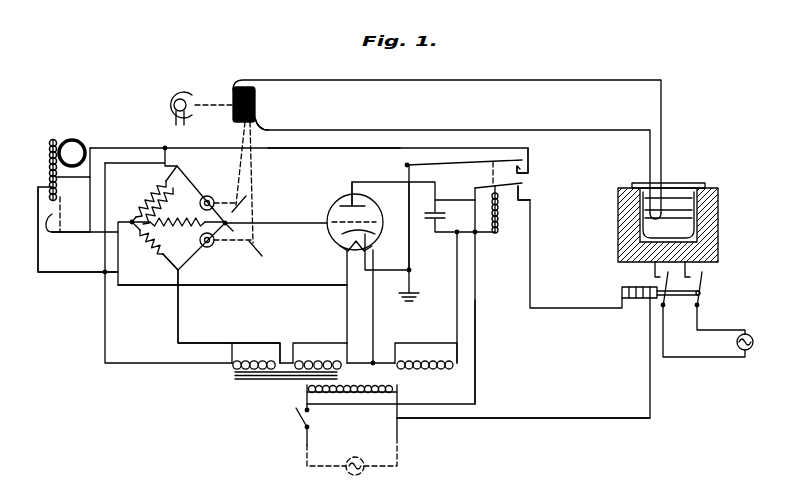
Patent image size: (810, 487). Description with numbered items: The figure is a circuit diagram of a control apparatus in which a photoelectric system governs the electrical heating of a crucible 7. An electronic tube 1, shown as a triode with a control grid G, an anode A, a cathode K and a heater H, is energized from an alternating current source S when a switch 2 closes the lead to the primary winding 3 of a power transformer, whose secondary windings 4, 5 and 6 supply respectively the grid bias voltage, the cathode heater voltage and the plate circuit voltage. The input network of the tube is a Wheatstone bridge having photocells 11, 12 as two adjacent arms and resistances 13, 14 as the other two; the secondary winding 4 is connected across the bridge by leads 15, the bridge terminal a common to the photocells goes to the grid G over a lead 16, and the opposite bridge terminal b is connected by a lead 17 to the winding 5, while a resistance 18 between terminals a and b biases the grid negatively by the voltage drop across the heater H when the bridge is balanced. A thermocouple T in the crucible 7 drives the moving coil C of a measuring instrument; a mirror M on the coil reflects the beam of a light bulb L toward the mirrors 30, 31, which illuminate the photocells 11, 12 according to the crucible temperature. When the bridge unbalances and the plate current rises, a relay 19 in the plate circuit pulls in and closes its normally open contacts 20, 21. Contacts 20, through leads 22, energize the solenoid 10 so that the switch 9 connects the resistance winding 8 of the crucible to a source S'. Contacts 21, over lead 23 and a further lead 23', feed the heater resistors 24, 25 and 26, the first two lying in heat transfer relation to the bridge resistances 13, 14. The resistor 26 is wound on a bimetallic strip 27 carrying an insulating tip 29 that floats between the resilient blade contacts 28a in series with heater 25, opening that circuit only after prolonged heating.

The light bulb L is at (185, 95).
The moving coil C is at (256, 103).
The mirror M is at (256, 116).
The conductor 23' is at (334, 157).
The heater resistor 26 is at (78, 141).
The bimetallic strip 27 is at (50, 165).
The tip 29 is at (50, 201).
The resilient blade contact 28a is at (50, 240).
The bridge terminal b is at (130, 221).
The heater resistor 24 is at (147, 194).
The resistance 13 is at (160, 196).
The resistance 18 is at (178, 231).
The heater resistor 25 is at (147, 246).
The resistance 14 is at (167, 256).
The photocell 11 is at (208, 197).
The photocell 12 is at (209, 250).
The bridge terminal a is at (233, 233).
The mirror 30 is at (249, 201).
The mirror 31 is at (264, 254).
The lead 16 is at (276, 213).
The leads 15 is at (180, 318).
The lead 17 is at (262, 287).
The electronic tube 1 is at (337, 205).
The anode A is at (363, 207).
The control grid G is at (330, 233).
The cathode K is at (376, 232).
The heater H is at (345, 250).
The lead 23 is at (424, 226).
The relay contacts 21 is at (527, 169).
The relay contacts 20 is at (525, 189).
The relay 19 is at (497, 232).
The leads 22 is at (477, 390).
The thermocouple T is at (618, 220).
The crucible 7 is at (676, 196).
The resistance winding 8 is at (700, 216).
The switch 9 is at (707, 285).
The solenoid 10 is at (632, 288).
The current source S' is at (754, 337).
The secondary winding 4 is at (254, 356).
The secondary winding 5 is at (320, 356).
The secondary winding 6 is at (427, 355).
The primary winding 3 is at (306, 393).
The switch 2 is at (300, 418).
The alternating current source S is at (352, 456).